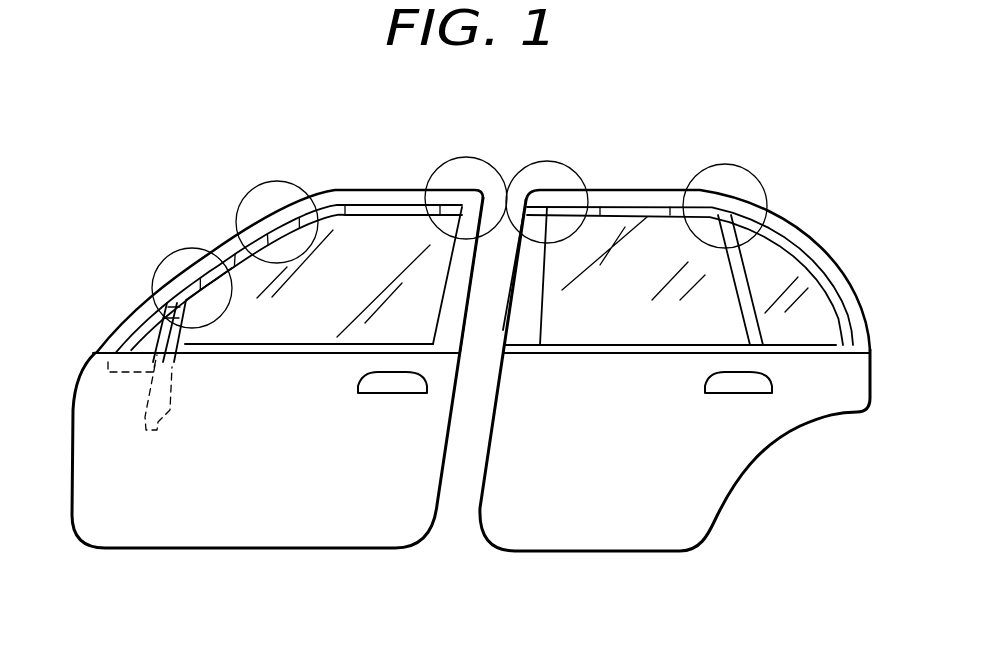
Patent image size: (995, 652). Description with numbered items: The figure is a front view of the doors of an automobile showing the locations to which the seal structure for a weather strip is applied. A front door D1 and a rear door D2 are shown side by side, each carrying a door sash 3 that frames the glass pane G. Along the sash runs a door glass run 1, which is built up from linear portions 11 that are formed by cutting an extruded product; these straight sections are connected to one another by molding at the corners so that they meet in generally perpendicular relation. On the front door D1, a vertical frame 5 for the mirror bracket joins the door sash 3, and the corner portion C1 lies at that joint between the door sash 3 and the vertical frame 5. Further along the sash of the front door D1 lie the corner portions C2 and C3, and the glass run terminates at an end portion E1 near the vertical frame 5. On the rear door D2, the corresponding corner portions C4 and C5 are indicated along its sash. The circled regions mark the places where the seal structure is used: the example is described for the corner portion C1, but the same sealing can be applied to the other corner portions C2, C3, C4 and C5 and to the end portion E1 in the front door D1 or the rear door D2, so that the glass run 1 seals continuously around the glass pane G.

The door glass run 1 is at (385, 186).
The door sash 3 is at (323, 202).
The vertical frame 5 is at (150, 350).
The linear portions 11 is at (157, 337).
The glass pane G is at (403, 238).
The corner portion C1 is at (183, 247).
The corner portion C2 is at (268, 182).
The corner portion C3 is at (464, 157).
The corner portion C4 is at (550, 162).
The corner portion C5 is at (732, 166).
The end portion E1 is at (173, 405).
The front door D1 is at (350, 530).
The rear door D2 is at (580, 530).